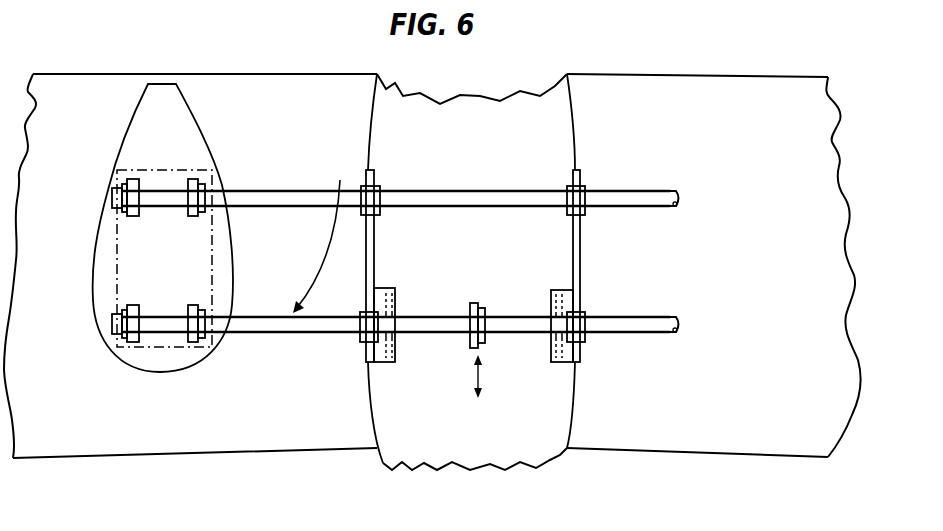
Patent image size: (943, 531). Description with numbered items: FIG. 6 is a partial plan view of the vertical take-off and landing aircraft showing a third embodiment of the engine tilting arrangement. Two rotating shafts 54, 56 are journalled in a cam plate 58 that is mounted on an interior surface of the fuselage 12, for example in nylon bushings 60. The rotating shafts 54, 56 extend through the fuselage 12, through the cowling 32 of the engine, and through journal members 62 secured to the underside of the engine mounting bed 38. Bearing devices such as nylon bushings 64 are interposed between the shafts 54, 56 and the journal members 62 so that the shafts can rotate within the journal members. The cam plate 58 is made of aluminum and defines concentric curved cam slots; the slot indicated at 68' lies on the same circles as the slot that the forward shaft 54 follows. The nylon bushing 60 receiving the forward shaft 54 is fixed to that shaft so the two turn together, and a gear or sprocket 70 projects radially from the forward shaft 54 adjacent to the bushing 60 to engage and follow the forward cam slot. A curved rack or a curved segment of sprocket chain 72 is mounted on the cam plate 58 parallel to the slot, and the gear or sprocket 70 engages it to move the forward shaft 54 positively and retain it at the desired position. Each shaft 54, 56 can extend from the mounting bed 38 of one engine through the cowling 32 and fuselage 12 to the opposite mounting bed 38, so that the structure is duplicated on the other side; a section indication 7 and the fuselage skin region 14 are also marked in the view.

The section line 7- 7 is at (428, 158).
The fuselage 12 is at (368, 131).
The support panel 14 is at (207, 440).
The cowling 32 is at (110, 151).
The engine mounting bed 38 is at (115, 276).
The forward shaft 54 is at (275, 327).
The rotating shaft 56 is at (290, 198).
The cam plate 58 is at (375, 240).
The nylon bushing 60 is at (377, 190).
The journal member 62 is at (200, 218).
The nylon bushing 64 is at (137, 218).
The fastener 68' is at (599, 313).
The gear or sprocket 70 is at (396, 303).
The sprocket chain segment 72 is at (558, 284).